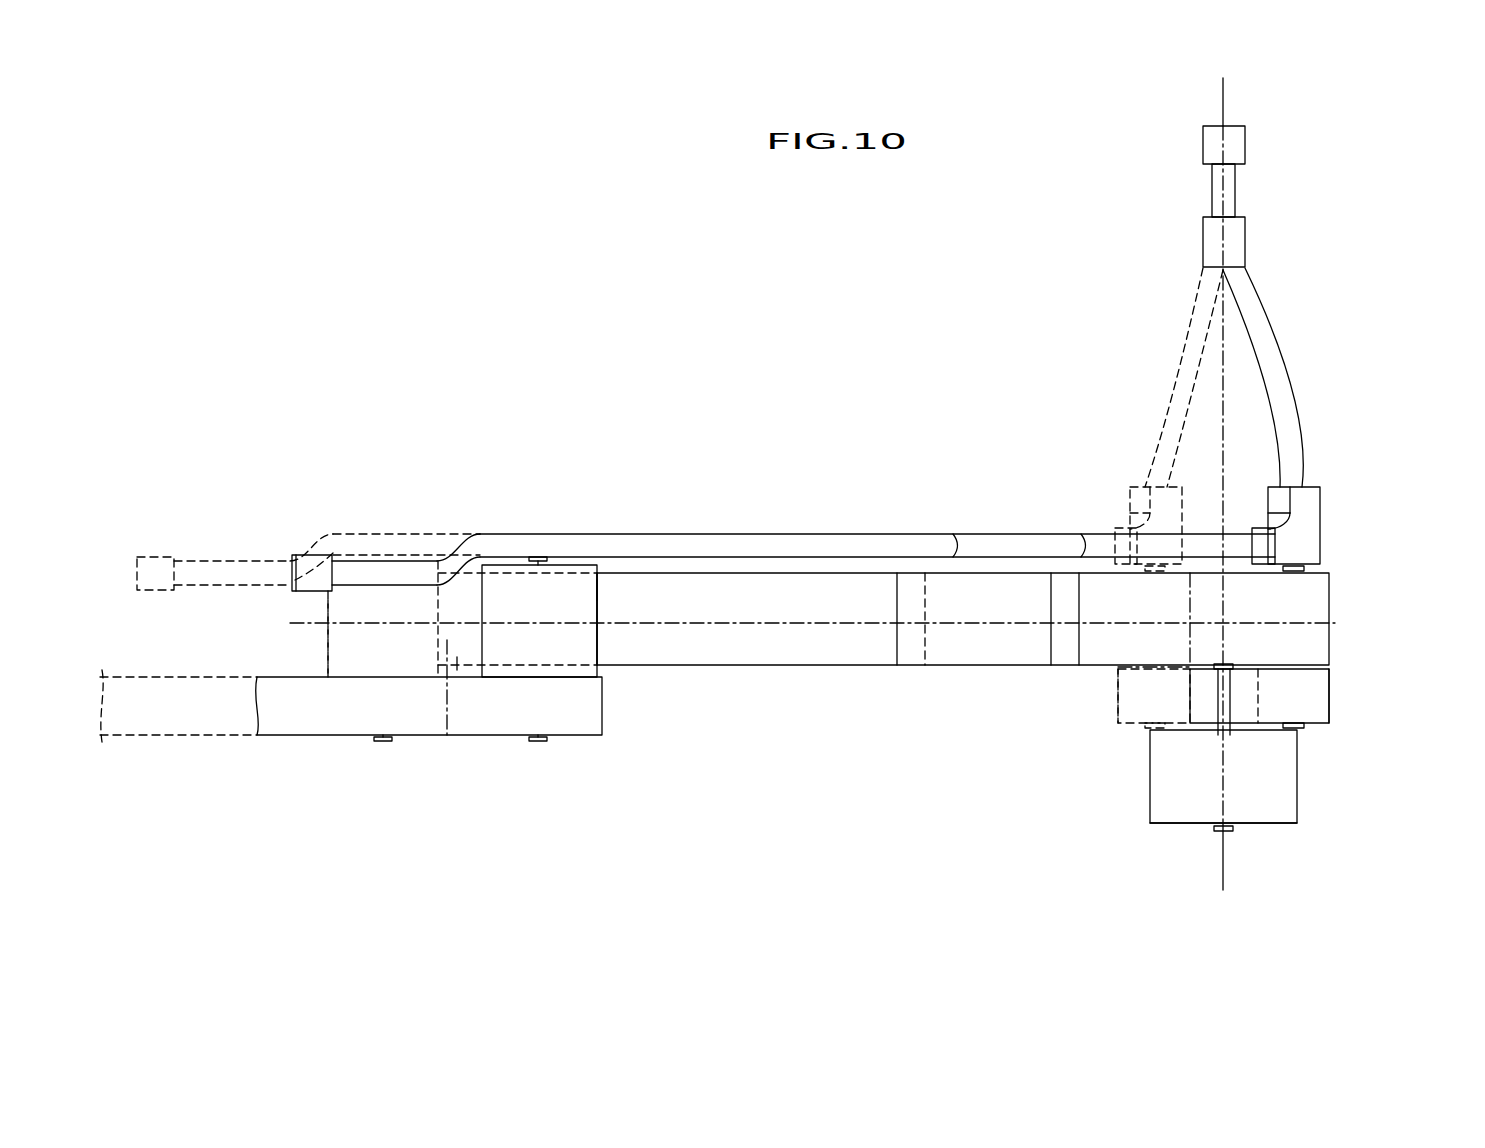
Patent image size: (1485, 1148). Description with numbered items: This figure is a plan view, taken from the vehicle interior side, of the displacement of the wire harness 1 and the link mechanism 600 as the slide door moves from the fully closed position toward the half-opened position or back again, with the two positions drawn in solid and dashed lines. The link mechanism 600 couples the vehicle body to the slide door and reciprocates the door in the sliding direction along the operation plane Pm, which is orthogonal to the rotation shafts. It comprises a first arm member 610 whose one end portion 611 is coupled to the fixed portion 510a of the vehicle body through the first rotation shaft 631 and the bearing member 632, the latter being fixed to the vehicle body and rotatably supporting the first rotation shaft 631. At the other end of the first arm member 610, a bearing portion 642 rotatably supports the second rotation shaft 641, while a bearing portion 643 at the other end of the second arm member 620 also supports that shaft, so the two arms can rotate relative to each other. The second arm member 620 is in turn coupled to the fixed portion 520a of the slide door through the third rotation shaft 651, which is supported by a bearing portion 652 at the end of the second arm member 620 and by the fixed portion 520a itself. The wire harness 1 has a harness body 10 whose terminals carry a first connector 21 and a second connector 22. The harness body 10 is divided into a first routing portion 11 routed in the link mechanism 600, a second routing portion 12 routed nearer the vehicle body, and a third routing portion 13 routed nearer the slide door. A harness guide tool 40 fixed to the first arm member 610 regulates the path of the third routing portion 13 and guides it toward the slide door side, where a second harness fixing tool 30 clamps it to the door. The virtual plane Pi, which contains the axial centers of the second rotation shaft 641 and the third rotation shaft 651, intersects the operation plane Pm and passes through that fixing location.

The wire harness 1 is at (412, 419).
The harness body 10 is at (412, 499).
The first routing portion 11 is at (440, 537).
The second routing portion 12 is at (233, 565).
The third routing portion 13 is at (1200, 285).
The first connector 21 is at (155, 557).
The second connector 22 is at (1203, 140).
The second harness fixing tool 30 is at (1203, 240).
The harness guide tool 40 is at (1130, 497).
The virtual plane Pi is at (1225, 103).
The operation plane of the link mechanism Pm is at (298, 622).
The fixed portion of the vehicle body 510a is at (172, 737).
The fixed portion of the slide door 520a is at (1167, 823).
The link mechanism 600 is at (448, 797).
The first arm member 610 is at (448, 650).
The one end portion of the first arm member 611 is at (458, 660).
The second arm member 620 is at (1337, 690).
The first rotation shaft 631 is at (383, 745).
The bearing member 632 is at (597, 590).
The second rotation shaft 641 is at (1300, 727).
The bearing portion 642 is at (1183, 602).
The bearing portion 643 is at (1327, 708).
The third rotation shaft 651 is at (1220, 832).
The bearing portion 652 is at (1202, 715).